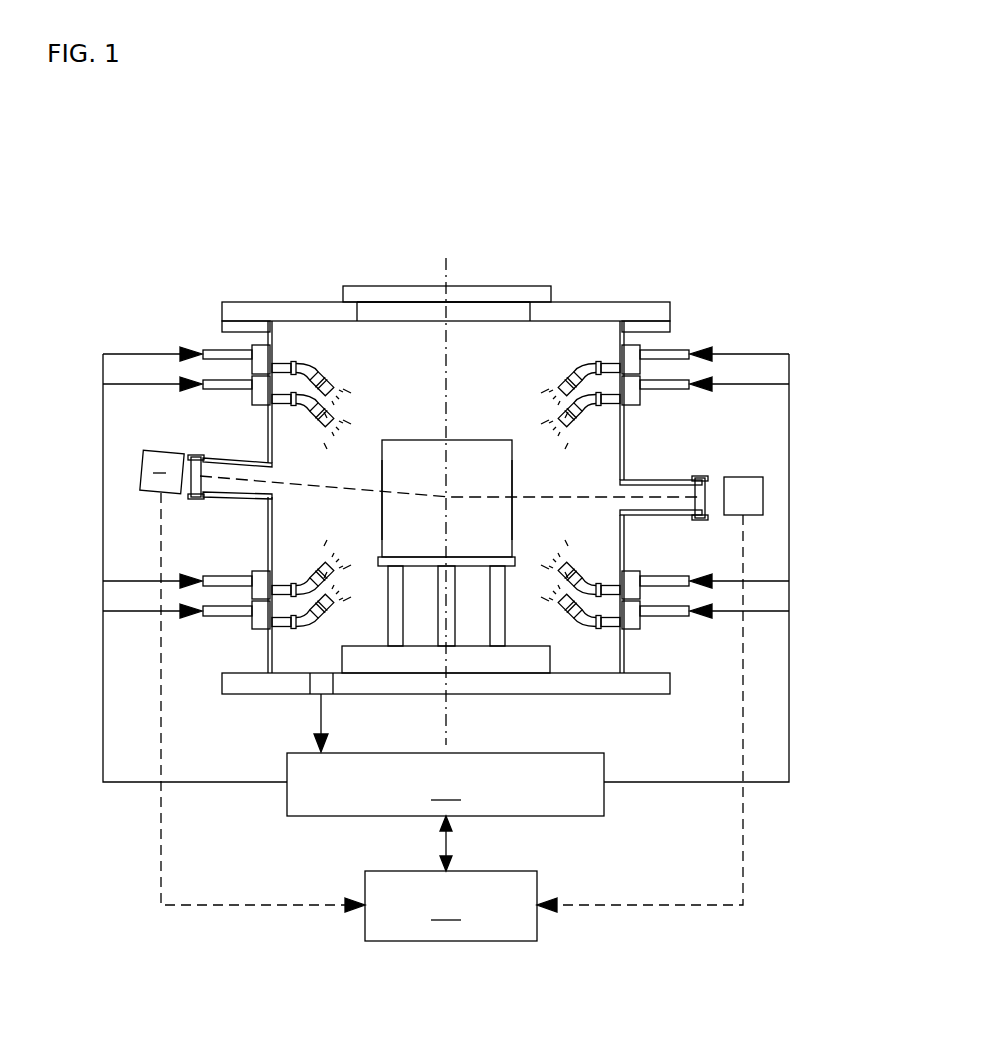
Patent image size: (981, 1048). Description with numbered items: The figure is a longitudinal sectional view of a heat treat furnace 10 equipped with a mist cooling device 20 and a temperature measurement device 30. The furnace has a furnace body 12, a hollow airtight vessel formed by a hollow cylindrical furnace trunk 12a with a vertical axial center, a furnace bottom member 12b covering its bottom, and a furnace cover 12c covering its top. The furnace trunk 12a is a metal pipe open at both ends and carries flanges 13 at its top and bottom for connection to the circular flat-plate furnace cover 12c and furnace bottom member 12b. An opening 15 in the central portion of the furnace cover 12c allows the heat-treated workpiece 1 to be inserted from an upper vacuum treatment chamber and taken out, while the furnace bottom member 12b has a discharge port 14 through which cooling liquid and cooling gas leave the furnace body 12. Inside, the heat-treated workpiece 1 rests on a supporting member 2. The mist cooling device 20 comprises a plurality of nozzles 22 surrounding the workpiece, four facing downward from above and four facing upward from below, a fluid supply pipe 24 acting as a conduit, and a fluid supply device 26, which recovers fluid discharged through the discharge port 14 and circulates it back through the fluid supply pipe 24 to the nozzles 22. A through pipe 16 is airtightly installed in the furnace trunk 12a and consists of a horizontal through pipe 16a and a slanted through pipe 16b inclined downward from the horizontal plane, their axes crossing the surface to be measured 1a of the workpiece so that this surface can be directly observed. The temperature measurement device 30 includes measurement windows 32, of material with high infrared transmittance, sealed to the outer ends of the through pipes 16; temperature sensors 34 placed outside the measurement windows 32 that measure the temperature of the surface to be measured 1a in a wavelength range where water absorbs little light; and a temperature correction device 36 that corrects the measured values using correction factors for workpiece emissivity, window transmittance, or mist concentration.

The heat-treated workpiece 1 is at (425, 458).
The surface to be measured 1a is at (512, 488).
The supporting member 2 is at (392, 580).
The heat treat furnace 10 is at (210, 264).
The furnace body 12 is at (477, 477).
The furnace trunk 12a is at (623, 457).
The furnace bottom member 12b is at (600, 694).
The furnace cover 12c is at (587, 308).
The flange 13 is at (665, 328).
The discharge port 14 is at (318, 694).
The opening 15 is at (473, 313).
The through pipe 16 is at (449, 508).
The horizontal through pipe 16a is at (657, 516).
The slanted through pipe 16b is at (237, 499).
The mist cooling device 20 is at (106, 334).
The nozzle 22 is at (320, 385).
The fluid supply pipe 24 is at (103, 512).
The fluid supply device 26 is at (445, 812).
The temperature measurement device 30 is at (576, 958).
The measurement window 32 is at (195, 457).
The temperature sensor 34 is at (153, 458).
The temperature correction device 36 is at (451, 906).